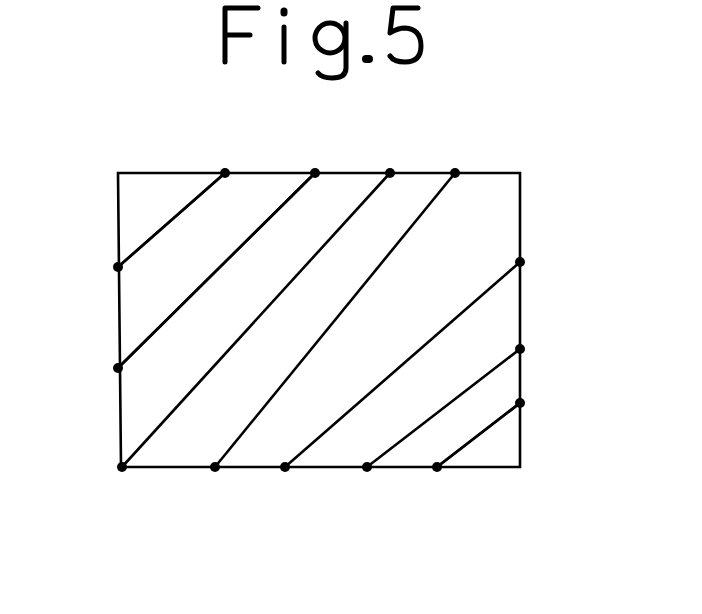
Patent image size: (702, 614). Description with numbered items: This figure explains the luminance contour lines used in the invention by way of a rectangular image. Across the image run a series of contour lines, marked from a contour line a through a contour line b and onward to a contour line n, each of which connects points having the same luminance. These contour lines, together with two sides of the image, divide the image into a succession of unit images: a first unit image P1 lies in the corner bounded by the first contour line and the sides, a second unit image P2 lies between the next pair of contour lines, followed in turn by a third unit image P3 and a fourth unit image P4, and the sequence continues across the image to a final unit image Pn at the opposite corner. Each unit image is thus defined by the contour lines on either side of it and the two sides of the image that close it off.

The unit image P1 is at (171, 220).
The unit image P2 is at (216, 270).
The unit image P3 is at (256, 320).
The unit image P4 is at (335, 320).
The unit image Pn is at (500, 447).
The contour line a is at (142, 250).
The contour line b is at (147, 348).
The contour line n is at (492, 417).